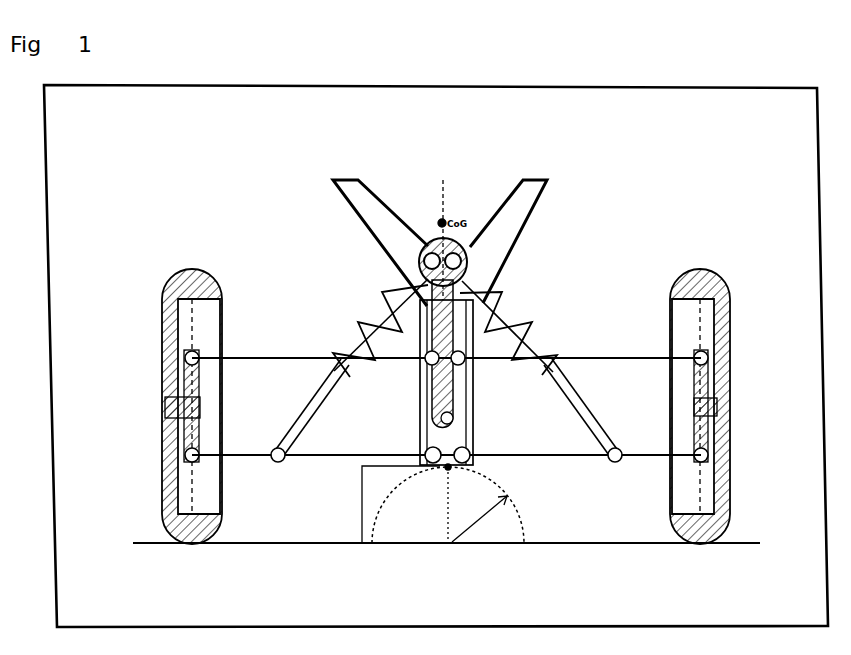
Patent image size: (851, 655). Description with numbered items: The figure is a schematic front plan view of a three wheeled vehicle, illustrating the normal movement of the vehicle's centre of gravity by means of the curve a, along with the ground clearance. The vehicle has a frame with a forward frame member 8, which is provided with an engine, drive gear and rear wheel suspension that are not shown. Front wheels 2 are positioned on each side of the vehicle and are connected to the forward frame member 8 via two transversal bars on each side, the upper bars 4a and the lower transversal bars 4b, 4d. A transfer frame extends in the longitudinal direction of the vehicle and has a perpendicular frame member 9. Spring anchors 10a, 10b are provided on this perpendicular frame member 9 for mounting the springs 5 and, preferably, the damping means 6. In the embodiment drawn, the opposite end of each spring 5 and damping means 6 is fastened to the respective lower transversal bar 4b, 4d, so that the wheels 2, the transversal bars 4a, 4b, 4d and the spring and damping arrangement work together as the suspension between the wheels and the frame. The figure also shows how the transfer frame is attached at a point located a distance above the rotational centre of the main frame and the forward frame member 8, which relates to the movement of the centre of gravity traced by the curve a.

The front wheel 2 is at (172, 282).
The transversal bar 4a is at (265, 363).
The lower transversal bar 4b is at (643, 450).
The lower transversal bar 4d is at (252, 453).
The spring 5 is at (357, 345).
The damping means 6 is at (443, 325).
The forward frame member 8 is at (473, 295).
The perpendicular frame member 9 is at (427, 240).
The spring anchor 10a is at (467, 233).
The spring anchor 10b is at (420, 260).
The curve a is at (522, 512).